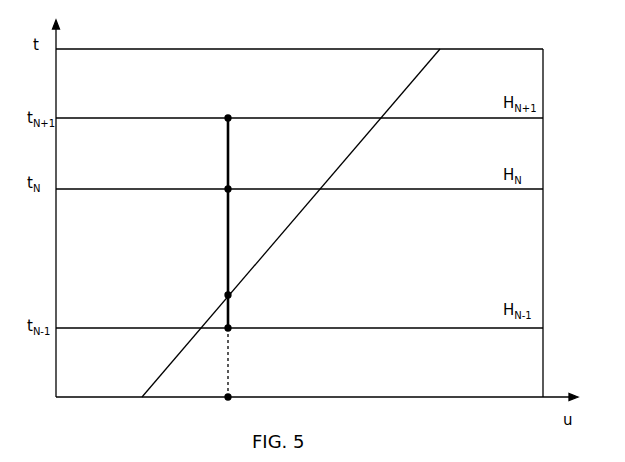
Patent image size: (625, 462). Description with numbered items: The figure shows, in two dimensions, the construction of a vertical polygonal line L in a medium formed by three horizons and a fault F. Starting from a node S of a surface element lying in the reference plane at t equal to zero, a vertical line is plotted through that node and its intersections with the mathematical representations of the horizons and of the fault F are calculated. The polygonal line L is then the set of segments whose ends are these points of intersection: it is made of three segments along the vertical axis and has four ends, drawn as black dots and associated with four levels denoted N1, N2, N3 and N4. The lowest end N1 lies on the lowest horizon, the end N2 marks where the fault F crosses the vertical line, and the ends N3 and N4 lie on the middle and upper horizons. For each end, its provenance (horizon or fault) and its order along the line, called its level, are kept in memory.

The fault F is at (291, 223).
The vertical polygonal line L is at (235, 223).
The node S is at (228, 376).
The level N1 is at (239, 338).
The level N2 is at (239, 297).
The level N3 is at (239, 196).
The level N4 is at (239, 126).